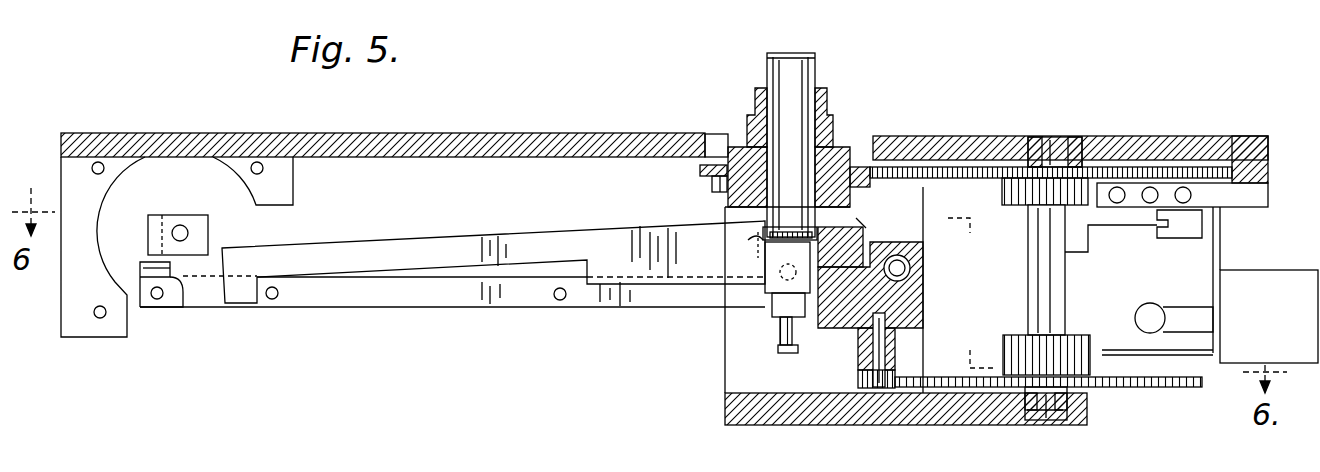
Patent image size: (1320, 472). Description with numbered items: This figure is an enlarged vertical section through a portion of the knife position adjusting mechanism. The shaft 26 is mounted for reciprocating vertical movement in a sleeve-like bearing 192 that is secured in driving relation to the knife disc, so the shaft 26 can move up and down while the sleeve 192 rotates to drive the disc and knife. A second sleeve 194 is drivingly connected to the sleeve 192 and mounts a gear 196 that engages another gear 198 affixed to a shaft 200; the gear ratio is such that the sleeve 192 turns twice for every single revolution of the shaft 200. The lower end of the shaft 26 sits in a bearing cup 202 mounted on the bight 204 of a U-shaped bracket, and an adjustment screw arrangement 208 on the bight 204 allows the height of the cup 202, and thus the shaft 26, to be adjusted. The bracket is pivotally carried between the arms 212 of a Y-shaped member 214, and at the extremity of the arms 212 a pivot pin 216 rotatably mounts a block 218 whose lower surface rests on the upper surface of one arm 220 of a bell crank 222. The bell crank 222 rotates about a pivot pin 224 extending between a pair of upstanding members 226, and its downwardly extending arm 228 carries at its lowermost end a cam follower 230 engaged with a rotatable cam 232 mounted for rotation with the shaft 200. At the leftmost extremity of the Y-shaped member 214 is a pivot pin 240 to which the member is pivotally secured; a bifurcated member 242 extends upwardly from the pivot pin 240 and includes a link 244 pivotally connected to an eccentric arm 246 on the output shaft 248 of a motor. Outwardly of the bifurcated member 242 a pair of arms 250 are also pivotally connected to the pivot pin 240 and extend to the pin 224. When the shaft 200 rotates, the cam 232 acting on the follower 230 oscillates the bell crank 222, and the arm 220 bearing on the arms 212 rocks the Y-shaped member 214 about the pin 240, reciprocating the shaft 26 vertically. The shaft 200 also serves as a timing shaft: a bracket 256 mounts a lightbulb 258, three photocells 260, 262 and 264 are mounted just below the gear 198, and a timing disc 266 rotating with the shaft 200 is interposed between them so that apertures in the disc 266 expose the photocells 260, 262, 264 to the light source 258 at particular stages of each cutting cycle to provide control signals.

The shaft 26 is at (790, 70).
The sleeve-like bearing 192 is at (829, 99).
The second sleeve 194 is at (748, 120).
The gear 196 is at (704, 170).
The gear 198 is at (948, 179).
The shaft 200 is at (1065, 268).
The bearing cup 202 is at (775, 270).
The bight 204 is at (775, 298).
The adjustment screw arrangement 208 is at (777, 346).
The arms 212 is at (861, 220).
The Y-shaped member 214 is at (468, 233).
The pivot pin 216 is at (865, 241).
The block 218 is at (748, 232).
The arm 220 is at (838, 324).
The bell crank 222 is at (926, 290).
The pivot pin 224 is at (901, 268).
The upstanding members 226 is at (922, 331).
The downwardly extending arm 228 is at (886, 351).
The cam follower 230 is at (880, 392).
The rotatable cam 232 is at (1178, 388).
The pivot pin 240 is at (157, 300).
The bifurcated member 242 is at (143, 268).
The link 244 is at (162, 300).
The eccentric arm 246 is at (160, 217).
The output shaft 248 is at (182, 229).
The arms 250 is at (456, 304).
The bracket 256 is at (1222, 259).
The lightbulb 258 is at (1152, 308).
The photocell 260 is at (1118, 187).
The photocell 262 is at (1150, 187).
The photocell 264 is at (1184, 187).
The timing disc 266 is at (1195, 226).